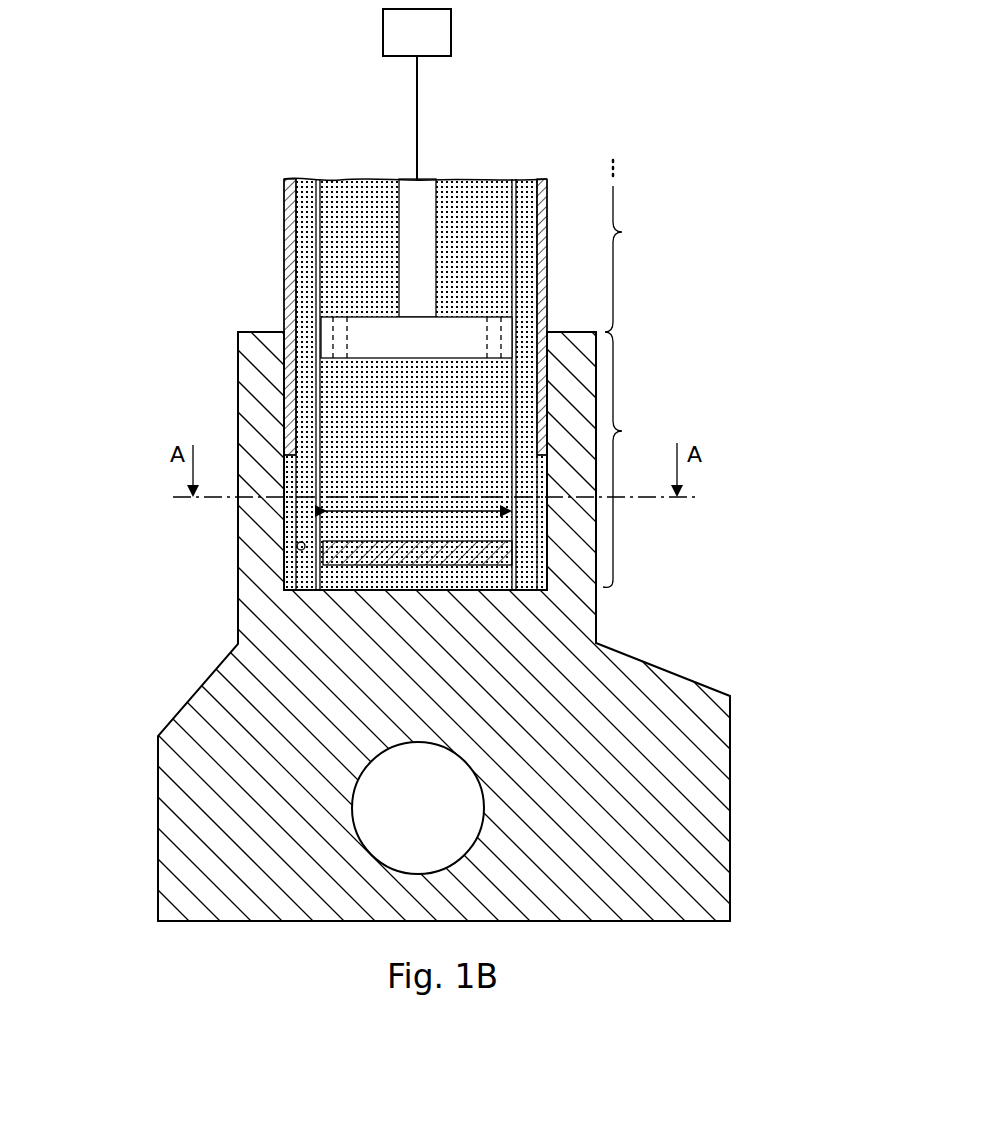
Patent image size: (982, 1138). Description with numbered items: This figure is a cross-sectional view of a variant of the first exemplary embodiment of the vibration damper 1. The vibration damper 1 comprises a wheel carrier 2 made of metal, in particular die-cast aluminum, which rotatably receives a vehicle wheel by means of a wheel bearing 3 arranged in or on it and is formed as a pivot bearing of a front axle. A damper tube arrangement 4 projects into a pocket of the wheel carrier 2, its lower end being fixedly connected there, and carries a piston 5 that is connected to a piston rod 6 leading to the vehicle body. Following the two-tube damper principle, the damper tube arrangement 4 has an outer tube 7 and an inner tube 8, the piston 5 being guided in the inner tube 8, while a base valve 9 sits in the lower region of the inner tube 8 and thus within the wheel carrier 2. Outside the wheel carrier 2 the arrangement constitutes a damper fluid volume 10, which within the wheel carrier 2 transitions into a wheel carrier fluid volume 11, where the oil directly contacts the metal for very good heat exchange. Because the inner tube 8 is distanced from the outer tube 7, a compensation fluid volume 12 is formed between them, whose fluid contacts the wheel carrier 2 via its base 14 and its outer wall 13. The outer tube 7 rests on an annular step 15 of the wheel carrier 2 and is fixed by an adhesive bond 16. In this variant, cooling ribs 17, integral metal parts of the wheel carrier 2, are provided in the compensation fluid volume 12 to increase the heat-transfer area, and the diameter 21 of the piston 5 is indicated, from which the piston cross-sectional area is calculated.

The vibration damper 1 is at (194, 200).
The wheel carrier 2 is at (190, 802).
The wheel bearing 3 is at (357, 845).
The damper tube arrangement 4 is at (565, 175).
The piston 5 is at (360, 338).
The piston rod 6 is at (427, 190).
The outer tube 7 is at (284, 210).
The inner tube 8 is at (316, 240).
The base valve 9 is at (332, 563).
The damper fluid volume 10 is at (630, 246).
The wheel carrier fluid volume 11 is at (629, 459).
The compensation fluid volume 12 is at (306, 276).
The outer wall 13 is at (297, 553).
The base 14 is at (457, 585).
The annular step 15 is at (282, 456).
The adhesive bond 16 is at (284, 372).
The cooling ribs 17 is at (548, 578).
The diameter 21 is at (400, 512).